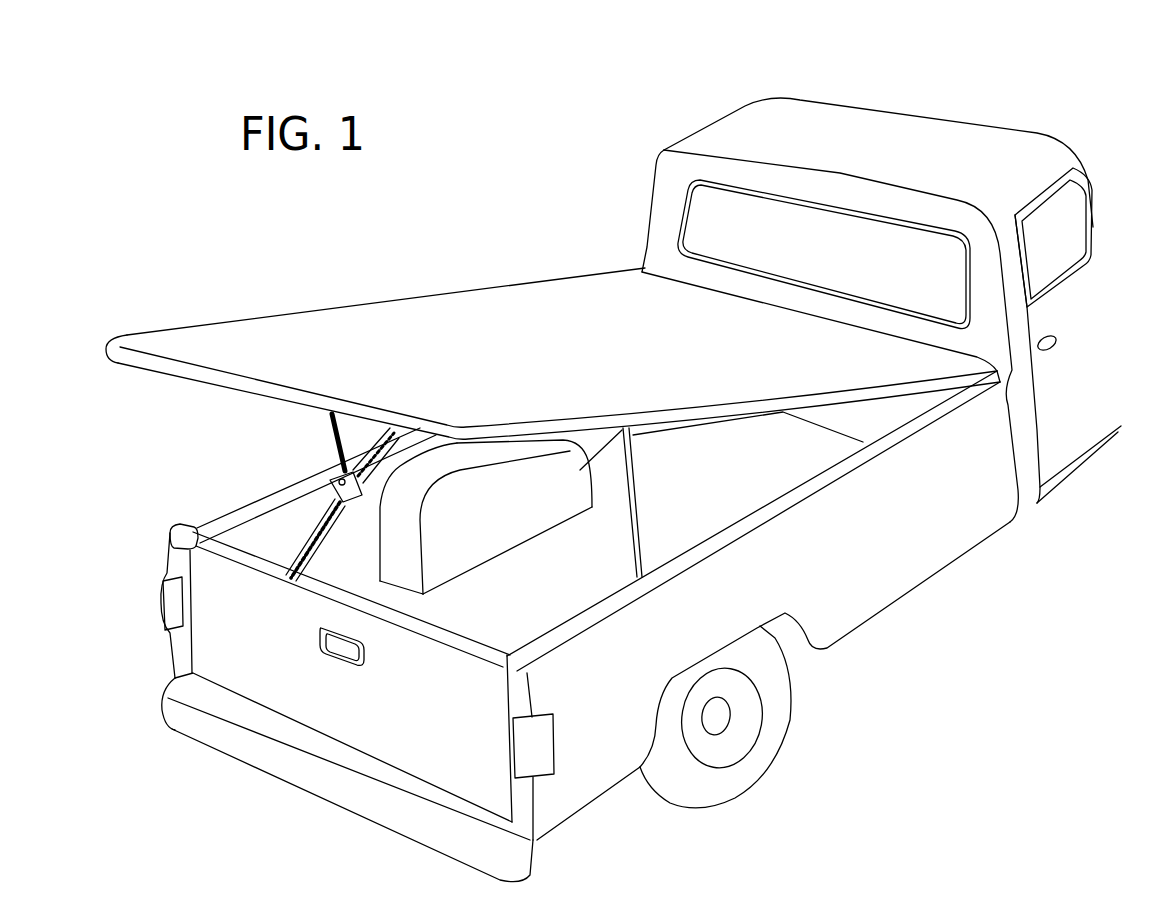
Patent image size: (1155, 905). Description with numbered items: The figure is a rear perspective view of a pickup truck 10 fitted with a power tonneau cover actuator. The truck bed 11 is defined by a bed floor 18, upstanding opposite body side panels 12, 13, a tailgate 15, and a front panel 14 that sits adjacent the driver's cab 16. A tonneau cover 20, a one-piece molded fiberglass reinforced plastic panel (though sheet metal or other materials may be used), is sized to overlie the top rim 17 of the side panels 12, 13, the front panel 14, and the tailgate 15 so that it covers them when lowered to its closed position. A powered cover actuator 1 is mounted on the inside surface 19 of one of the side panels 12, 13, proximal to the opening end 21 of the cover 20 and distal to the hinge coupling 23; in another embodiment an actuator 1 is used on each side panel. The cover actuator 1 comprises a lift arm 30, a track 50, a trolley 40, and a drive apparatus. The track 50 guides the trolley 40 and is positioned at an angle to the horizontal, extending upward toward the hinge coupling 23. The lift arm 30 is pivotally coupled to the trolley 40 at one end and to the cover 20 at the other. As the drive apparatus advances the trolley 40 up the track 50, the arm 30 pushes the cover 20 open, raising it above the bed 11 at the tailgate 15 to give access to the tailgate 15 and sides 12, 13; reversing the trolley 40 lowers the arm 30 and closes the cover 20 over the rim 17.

The powered cover actuator 1 is at (330, 560).
The pickup truck 10 is at (730, 97).
The truck bed 11 is at (155, 447).
The body side panel 12 is at (200, 517).
The body side panel 13 is at (880, 570).
The front panel 14 is at (917, 400).
The tailgate 15 is at (227, 620).
The driver's cab 16 is at (648, 190).
The top rim 17 is at (277, 483).
The bed floor 18 is at (527, 606).
The inside surface 19 is at (237, 530).
The tonneau cover 20 is at (267, 328).
The opening end 21 is at (160, 338).
The hinge coupling 23 is at (973, 355).
The lift arm 30 is at (330, 432).
The trolley 40 is at (365, 498).
The track 50 is at (313, 527).